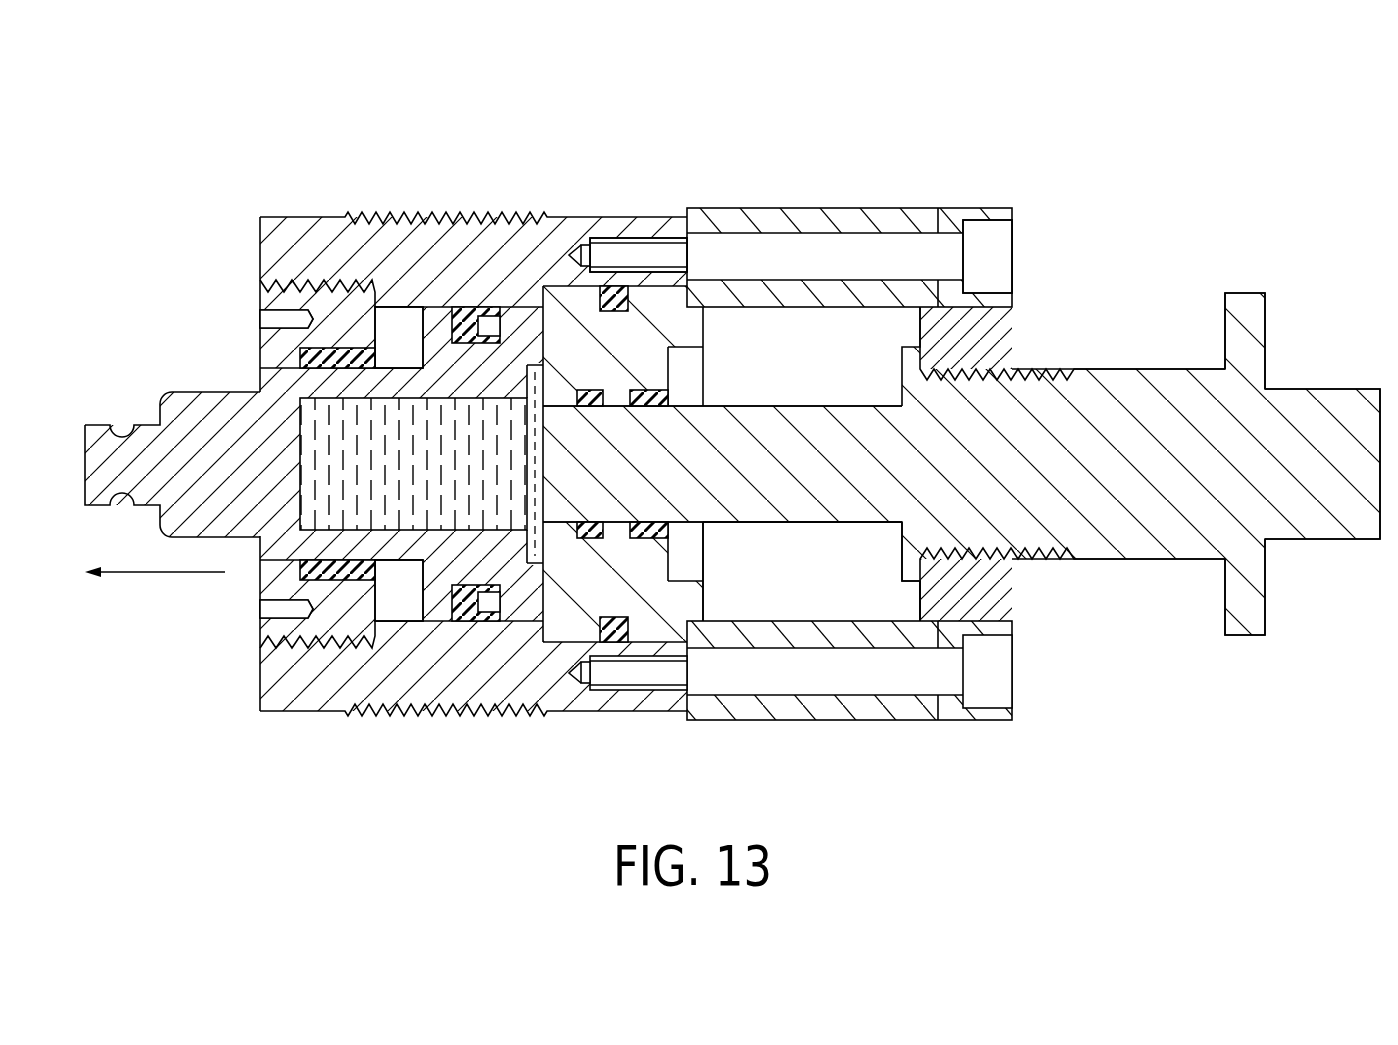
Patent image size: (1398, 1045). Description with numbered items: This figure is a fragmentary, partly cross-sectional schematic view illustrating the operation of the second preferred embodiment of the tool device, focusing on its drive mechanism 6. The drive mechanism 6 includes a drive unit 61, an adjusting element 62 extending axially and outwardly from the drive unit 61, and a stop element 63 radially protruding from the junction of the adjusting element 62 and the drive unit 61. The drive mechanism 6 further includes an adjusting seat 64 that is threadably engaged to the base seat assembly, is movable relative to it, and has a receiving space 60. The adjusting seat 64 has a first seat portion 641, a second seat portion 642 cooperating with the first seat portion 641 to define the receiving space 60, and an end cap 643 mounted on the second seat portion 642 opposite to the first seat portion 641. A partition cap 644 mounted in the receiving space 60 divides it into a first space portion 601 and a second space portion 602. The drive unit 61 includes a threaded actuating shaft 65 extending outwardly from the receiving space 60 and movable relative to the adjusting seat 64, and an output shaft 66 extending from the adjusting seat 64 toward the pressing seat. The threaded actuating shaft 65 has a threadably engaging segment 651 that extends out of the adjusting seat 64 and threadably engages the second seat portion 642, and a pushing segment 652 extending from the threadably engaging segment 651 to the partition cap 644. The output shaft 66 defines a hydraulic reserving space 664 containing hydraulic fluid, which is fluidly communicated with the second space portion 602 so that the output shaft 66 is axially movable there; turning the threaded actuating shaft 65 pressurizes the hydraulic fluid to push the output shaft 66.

The drive mechanism 6 is at (1247, 647).
The receiving space 60 is at (872, 572).
The first space portion 601 is at (830, 588).
The second space portion 602 is at (405, 600).
The drive unit 61 is at (1123, 579).
The adjusting element 62 is at (1323, 512).
The stop element 63 is at (1257, 594).
The adjusting seat 64 is at (903, 202).
The first seat portion 641 is at (550, 240).
The second seat portion 642 is at (810, 222).
The end cap 643 is at (272, 591).
The partition cap 644 is at (650, 612).
The threaded actuating shaft 65 is at (1162, 562).
The threadably engaging segment 651 is at (1078, 544).
The pushing segment 652 is at (772, 492).
The output shaft 66 is at (215, 384).
The hydraulic reserving space 664 is at (460, 396).